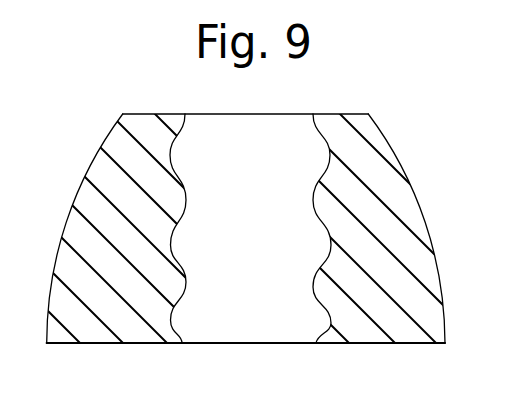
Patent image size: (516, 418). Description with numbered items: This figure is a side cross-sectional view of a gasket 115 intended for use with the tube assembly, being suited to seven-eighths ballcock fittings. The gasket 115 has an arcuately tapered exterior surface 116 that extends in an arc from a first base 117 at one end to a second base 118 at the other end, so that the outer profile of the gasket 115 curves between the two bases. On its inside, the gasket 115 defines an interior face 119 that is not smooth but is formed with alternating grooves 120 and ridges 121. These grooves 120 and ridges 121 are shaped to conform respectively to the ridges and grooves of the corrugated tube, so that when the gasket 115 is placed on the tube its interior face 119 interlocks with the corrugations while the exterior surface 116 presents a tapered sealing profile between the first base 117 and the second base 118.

The gasket 115 is at (412, 209).
The arcuately tapered exterior surface 116 is at (397, 155).
The first base 117 is at (270, 344).
The second base 118 is at (326, 114).
The interior face 119 is at (318, 160).
The grooves 120 is at (172, 230).
The ridges 121 is at (187, 192).